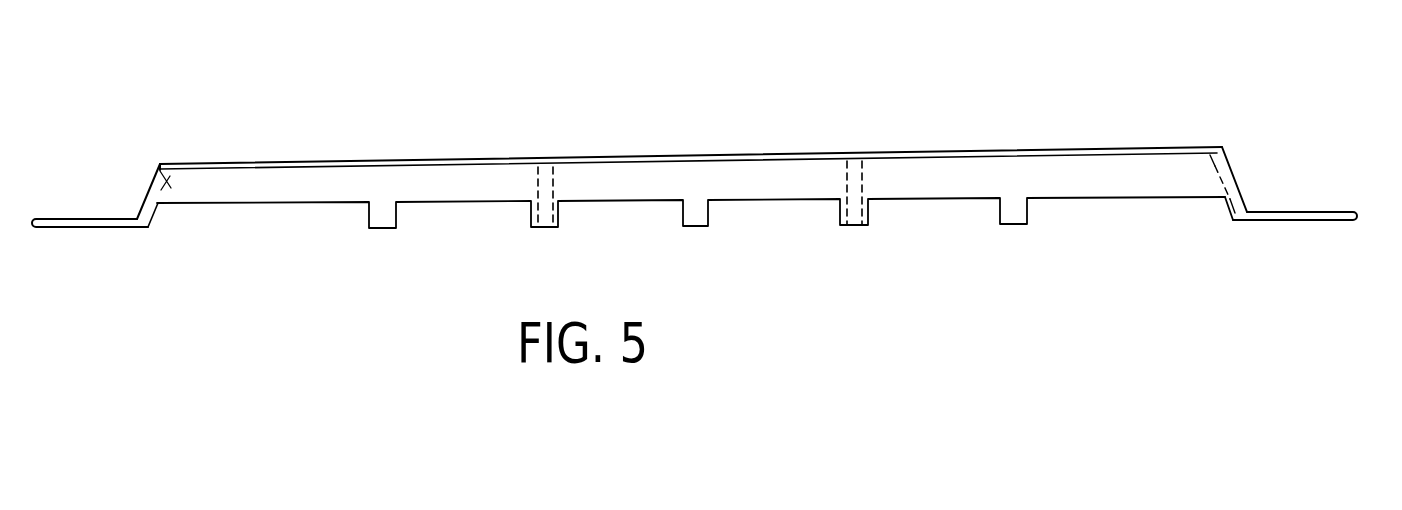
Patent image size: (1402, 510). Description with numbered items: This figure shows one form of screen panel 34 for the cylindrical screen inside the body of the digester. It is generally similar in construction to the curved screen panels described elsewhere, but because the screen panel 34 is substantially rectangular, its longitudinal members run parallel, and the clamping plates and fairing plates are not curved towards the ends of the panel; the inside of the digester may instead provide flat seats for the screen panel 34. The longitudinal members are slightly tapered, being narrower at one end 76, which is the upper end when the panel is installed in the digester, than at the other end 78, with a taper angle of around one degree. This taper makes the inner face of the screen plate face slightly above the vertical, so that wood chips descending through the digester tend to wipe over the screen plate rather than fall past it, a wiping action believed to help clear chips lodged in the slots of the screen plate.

The screen panel 34 is at (712, 162).
The end 76 is at (160, 164).
The other end 78 is at (1190, 172).